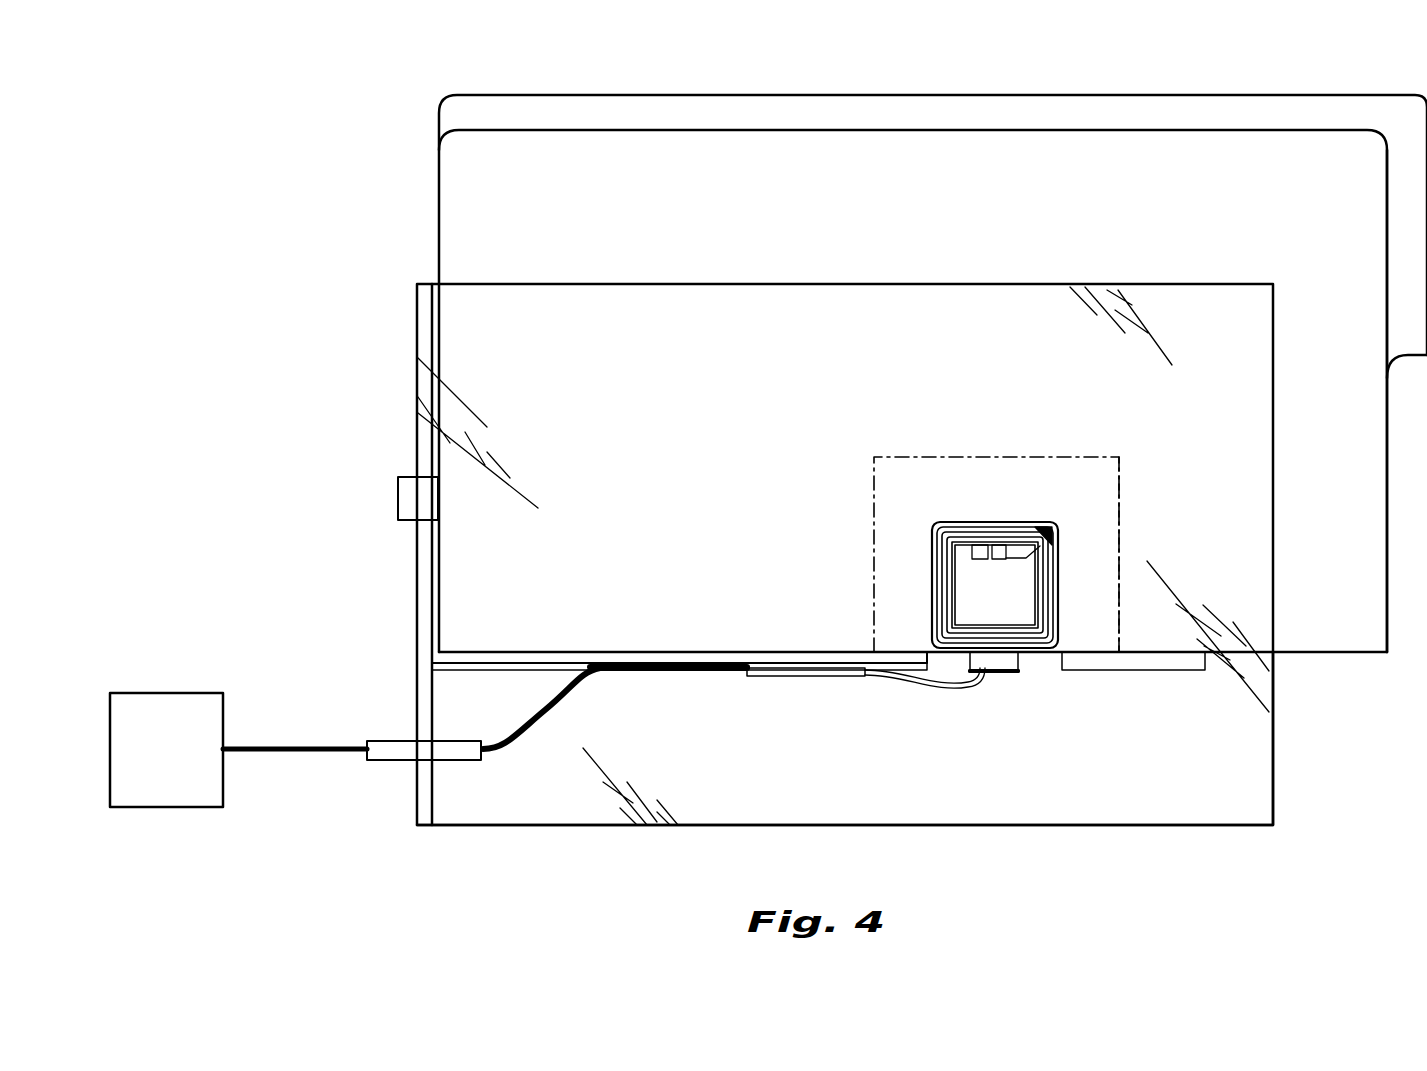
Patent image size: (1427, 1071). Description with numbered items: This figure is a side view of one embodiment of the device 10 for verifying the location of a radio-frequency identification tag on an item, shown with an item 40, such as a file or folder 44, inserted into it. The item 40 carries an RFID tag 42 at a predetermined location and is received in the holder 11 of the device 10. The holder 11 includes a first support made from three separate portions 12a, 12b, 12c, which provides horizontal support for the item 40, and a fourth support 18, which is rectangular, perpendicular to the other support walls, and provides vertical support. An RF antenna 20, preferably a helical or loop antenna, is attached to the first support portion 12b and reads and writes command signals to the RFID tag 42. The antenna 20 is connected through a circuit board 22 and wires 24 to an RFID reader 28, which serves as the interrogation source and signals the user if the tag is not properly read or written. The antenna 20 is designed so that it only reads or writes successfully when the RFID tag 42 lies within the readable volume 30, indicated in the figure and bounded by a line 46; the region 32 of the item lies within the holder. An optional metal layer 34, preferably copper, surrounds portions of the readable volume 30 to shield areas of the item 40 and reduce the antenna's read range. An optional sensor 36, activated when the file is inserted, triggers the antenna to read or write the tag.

The device 10 is at (417, 592).
The holder 11 is at (1273, 755).
The first support portion 12a is at (700, 657).
The first support portion 12b is at (997, 674).
The first support portion 12c is at (1158, 672).
The fourth support 18 is at (418, 317).
The RF antenna 20 is at (1018, 673).
The circuit board 22 is at (830, 678).
The wires 24 is at (568, 688).
The RFID reader 28 is at (159, 712).
The readable volume 30 is at (1100, 456).
The panel surface 32 is at (772, 480).
The metal layer 34 is at (1258, 525).
The sensor 36 is at (398, 498).
The item 40 is at (1058, 95).
The RFID tag 42 is at (970, 522).
The folder 44 is at (750, 146).
The boundary line 46 is at (1118, 506).